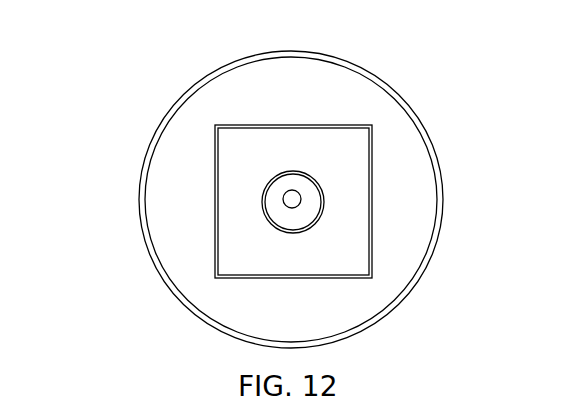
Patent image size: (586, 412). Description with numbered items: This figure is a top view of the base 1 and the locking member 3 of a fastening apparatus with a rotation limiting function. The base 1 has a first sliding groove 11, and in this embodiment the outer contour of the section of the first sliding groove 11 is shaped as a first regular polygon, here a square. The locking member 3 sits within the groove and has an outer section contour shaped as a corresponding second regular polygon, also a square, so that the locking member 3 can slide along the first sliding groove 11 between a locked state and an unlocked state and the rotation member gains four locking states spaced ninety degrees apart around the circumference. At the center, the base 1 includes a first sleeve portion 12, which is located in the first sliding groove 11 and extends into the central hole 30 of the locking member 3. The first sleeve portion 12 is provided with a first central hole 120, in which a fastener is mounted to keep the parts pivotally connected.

The base 1 is at (400, 93).
The first sliding groove 11 is at (288, 125).
The locking member 3 is at (347, 230).
The central hole 30 is at (282, 169).
The first sleeve portion 12 is at (280, 190).
The first central hole 120 is at (287, 202).